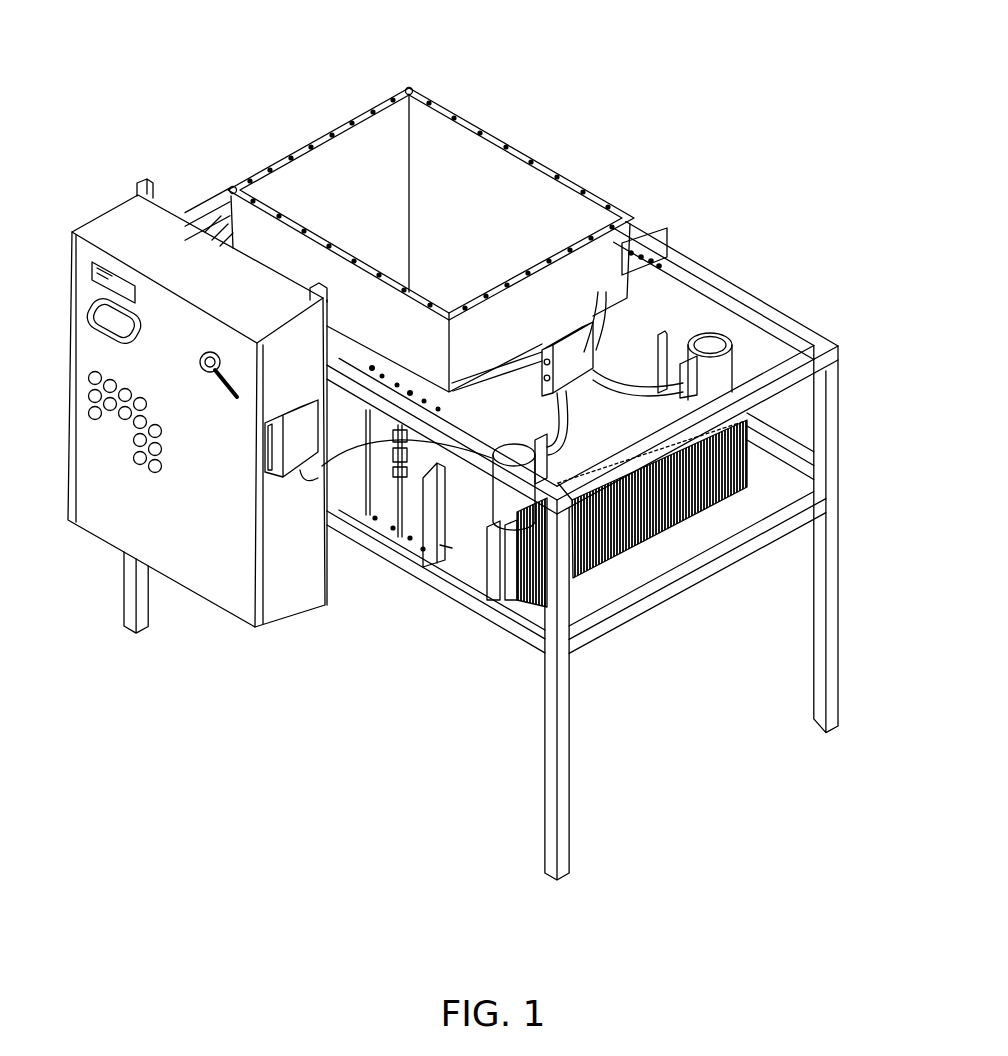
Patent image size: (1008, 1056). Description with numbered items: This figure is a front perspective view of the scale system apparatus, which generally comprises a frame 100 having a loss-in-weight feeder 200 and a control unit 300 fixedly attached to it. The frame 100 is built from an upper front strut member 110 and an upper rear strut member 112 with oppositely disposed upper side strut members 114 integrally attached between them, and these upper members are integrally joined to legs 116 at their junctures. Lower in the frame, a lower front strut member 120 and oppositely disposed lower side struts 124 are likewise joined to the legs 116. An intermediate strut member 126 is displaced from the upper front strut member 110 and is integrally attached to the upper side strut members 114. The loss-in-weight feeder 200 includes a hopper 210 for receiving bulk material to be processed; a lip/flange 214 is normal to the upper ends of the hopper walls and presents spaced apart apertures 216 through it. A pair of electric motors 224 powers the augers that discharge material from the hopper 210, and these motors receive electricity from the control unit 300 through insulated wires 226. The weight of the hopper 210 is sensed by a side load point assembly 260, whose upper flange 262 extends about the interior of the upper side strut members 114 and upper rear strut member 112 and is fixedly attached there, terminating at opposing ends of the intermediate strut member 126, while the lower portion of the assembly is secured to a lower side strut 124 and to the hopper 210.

The frame 100 is at (773, 285).
The upper front strut member 110 is at (786, 385).
The upper rear strut member 112 is at (200, 216).
The upper side strut members 114 is at (788, 325).
The legs 116 is at (128, 607).
The lower front strut member 120 is at (633, 614).
The lower side struts 124 is at (780, 466).
The intermediate strut member 126 is at (657, 291).
The loss-in-weight feeder 200 is at (280, 92).
The hopper 210 is at (487, 168).
The lip/flange 214 is at (580, 190).
The apertures 216 is at (406, 88).
The electric motors 224 is at (713, 343).
The insulated wires 226 is at (490, 378).
The side load point assembly 260 is at (384, 518).
The upper flange 262 is at (650, 252).
The control unit 300 is at (207, 563).